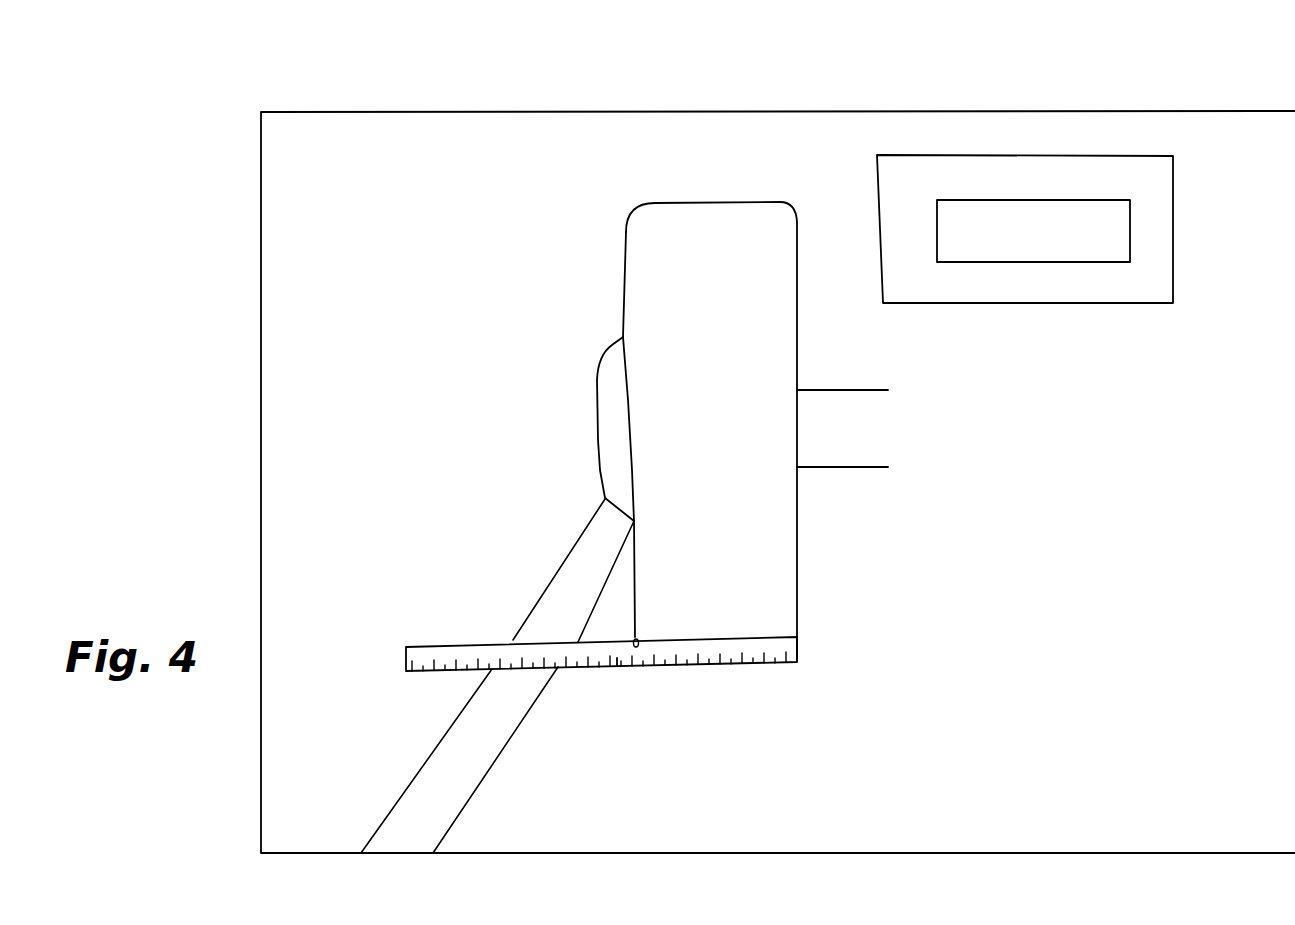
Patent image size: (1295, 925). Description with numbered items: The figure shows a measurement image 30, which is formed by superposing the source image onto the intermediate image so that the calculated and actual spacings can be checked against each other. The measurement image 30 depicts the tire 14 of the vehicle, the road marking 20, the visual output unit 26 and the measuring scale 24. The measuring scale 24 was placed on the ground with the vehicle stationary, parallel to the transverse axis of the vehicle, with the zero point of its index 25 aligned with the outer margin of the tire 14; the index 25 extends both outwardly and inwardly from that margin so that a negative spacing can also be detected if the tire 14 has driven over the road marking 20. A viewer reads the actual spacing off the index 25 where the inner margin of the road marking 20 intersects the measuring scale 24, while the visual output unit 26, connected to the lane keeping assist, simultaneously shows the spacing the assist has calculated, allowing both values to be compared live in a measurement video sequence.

The tire 14 is at (647, 255).
The road marking 20 is at (483, 747).
The measuring scale 24 is at (757, 643).
The index 25 is at (617, 666).
The visual output unit 26 is at (1072, 175).
The measurement image 30 is at (261, 540).